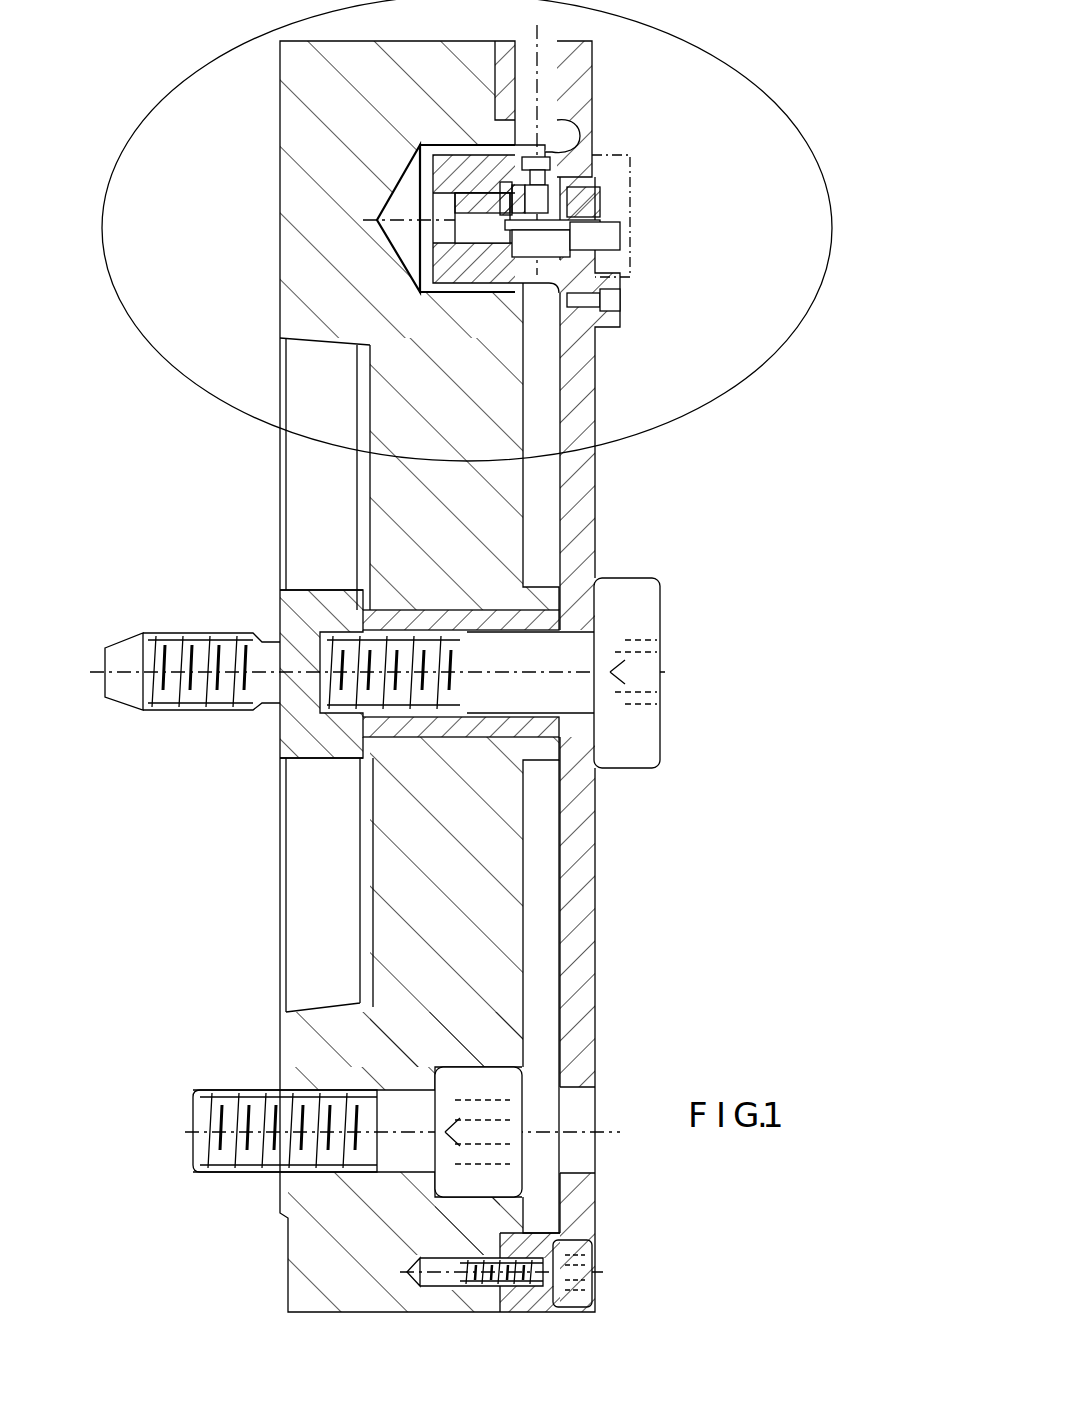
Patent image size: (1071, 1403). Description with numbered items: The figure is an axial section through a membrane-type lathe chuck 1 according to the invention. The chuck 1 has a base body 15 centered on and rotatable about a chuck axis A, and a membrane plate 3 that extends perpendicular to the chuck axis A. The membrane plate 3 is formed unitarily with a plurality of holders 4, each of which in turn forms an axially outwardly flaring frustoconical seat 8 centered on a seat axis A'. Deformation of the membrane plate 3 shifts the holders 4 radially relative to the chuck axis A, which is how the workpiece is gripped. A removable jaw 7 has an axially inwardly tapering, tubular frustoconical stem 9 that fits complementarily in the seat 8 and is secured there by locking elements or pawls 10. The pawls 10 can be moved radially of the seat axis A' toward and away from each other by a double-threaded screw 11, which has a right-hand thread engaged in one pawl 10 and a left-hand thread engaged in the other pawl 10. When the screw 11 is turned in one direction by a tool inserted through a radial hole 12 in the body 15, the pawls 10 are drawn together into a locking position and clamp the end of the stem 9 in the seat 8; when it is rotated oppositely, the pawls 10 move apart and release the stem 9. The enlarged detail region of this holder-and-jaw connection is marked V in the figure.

The chuck 1 is at (482, 668).
The membrane plate 3 is at (583, 928).
The holder 4 is at (448, 175).
The removable jaw 7 is at (602, 152).
The frustoconical seat 8 is at (540, 287).
The stem 9 is at (548, 162).
The locking pawl 10 is at (567, 227).
The double-threaded screw 11 is at (562, 257).
The radial hole 12 is at (580, 43).
The base body 15 is at (493, 857).
The chuck axis A is at (192, 636).
The seat axis A' is at (367, 216).
The detail view V is at (819, 285).